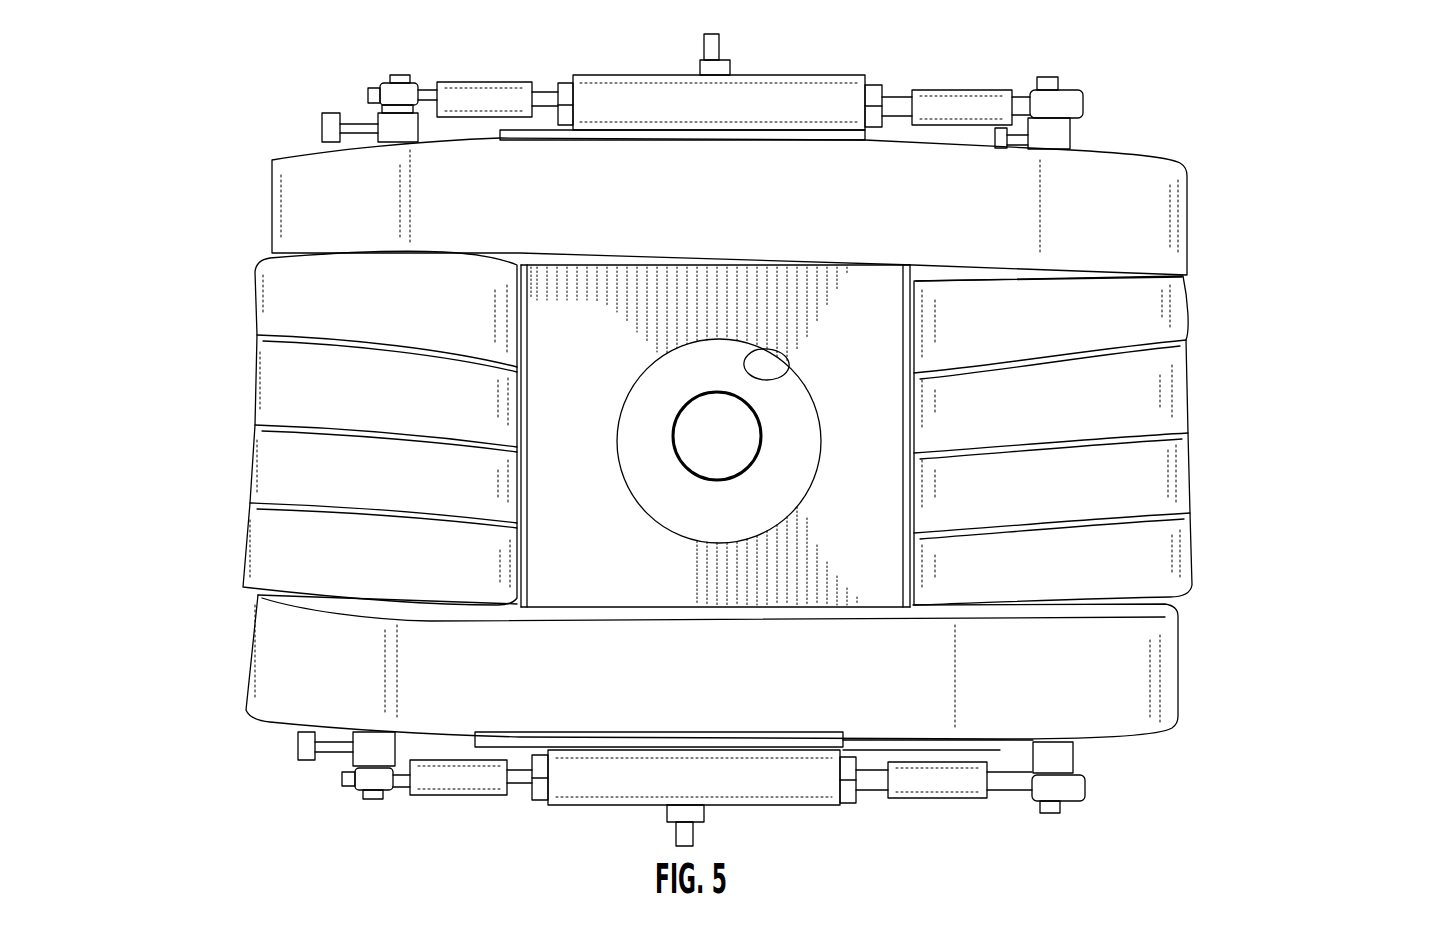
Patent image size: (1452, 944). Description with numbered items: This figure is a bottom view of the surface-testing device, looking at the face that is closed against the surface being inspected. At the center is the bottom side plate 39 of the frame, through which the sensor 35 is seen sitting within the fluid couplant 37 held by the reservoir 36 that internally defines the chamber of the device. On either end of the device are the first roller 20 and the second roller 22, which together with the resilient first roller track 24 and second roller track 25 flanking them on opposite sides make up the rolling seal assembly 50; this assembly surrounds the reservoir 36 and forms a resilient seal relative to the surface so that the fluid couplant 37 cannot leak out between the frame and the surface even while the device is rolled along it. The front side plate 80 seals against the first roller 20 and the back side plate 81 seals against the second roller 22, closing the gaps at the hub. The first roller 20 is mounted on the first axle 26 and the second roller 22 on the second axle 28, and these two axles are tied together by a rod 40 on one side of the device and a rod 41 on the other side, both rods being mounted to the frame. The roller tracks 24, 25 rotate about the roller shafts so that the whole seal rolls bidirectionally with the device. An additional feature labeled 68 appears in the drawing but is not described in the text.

The first roller 20 is at (272, 325).
The second roller 22 is at (1162, 363).
The first roller track 24 is at (270, 640).
The second roller track 25 is at (290, 205).
The first axle 26 is at (403, 130).
The second axle 28 is at (1057, 135).
The sensor 35 is at (704, 450).
The reservoir 36 is at (812, 483).
The fluid couplant 37 is at (793, 437).
The bottom side plate 39 is at (580, 405).
The rod 40 is at (730, 778).
The rod 41 is at (815, 100).
The rolling seal assembly 50 is at (932, 300).
The opening 68 is at (762, 349).
The front side plate 80 is at (527, 476).
The back side plate 81 is at (908, 572).